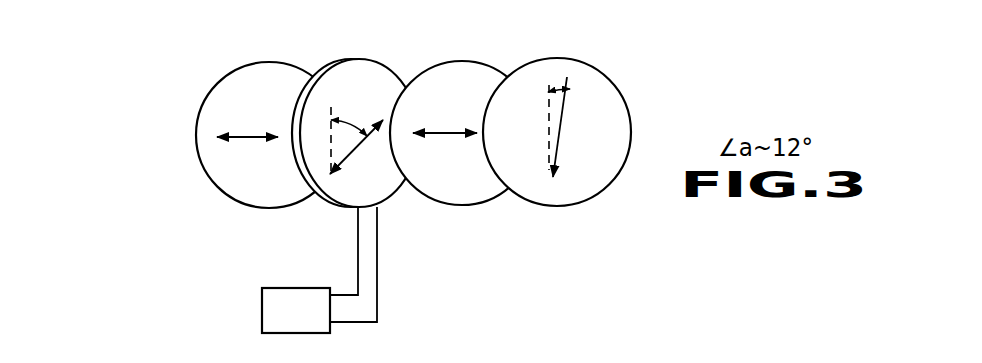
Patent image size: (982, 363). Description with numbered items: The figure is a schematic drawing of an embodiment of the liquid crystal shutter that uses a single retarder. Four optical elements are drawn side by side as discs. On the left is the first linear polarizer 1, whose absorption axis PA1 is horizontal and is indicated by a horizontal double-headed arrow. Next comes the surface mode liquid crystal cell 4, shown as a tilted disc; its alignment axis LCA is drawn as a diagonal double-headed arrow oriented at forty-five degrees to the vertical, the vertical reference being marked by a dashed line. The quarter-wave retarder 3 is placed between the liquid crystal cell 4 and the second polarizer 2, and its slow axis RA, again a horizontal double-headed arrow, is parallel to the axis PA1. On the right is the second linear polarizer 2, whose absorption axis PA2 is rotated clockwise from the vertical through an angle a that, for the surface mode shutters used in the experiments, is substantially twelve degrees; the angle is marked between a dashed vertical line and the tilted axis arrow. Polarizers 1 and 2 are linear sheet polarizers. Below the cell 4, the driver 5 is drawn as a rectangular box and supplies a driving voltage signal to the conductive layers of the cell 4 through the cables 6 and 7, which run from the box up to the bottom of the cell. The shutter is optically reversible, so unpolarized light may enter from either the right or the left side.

The first linear polarizer 1 is at (263, 140).
The second linear polarizer 2 is at (557, 139).
The quarter-wave retarder 3 is at (462, 137).
The surface mode liquid crystal cell 4 is at (362, 141).
The driver 5 is at (260, 315).
The cable 6 is at (357, 258).
The cable 7 is at (380, 293).
The absorption axis of first polarizer PA1 is at (243, 137).
The absorption axis of second polarizer PA2 is at (563, 135).
The alignment axis of liquid crystal cell LCA is at (358, 148).
The slow axis of retarder RA is at (450, 133).